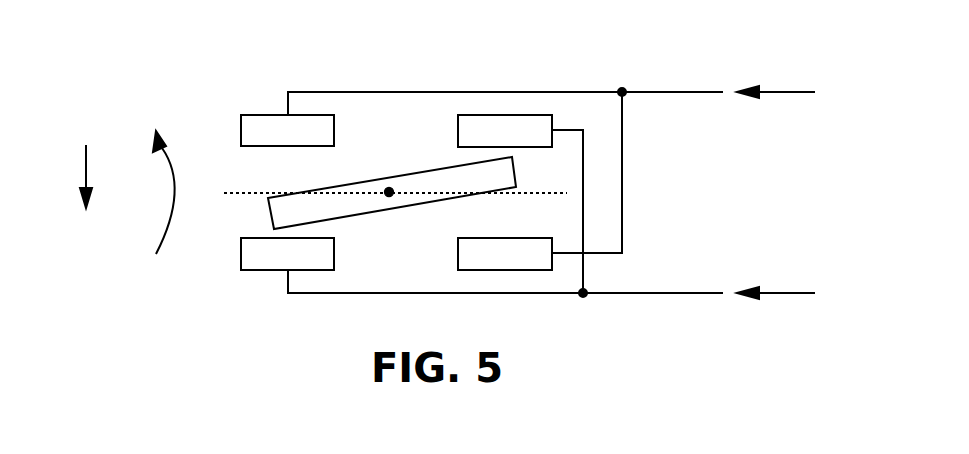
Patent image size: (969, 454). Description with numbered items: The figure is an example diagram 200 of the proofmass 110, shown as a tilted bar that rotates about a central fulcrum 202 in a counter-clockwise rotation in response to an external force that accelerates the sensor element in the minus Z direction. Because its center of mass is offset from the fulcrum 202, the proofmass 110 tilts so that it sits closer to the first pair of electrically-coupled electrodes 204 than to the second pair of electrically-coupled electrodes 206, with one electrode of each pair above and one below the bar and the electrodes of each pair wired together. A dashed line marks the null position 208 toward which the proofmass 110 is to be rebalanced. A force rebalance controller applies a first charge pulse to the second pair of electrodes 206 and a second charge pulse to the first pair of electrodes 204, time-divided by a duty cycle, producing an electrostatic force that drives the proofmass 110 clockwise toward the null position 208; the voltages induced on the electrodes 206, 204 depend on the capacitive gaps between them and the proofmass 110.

The diagram 200 is at (112, 38).
The proofmass 110 is at (447, 167).
The fulcrum 202 is at (389, 192).
The first pair of electrically-coupled electrodes 204 is at (510, 115).
The second pair of electrically-coupled electrodes 206 is at (277, 115).
The null position 208 is at (262, 193).